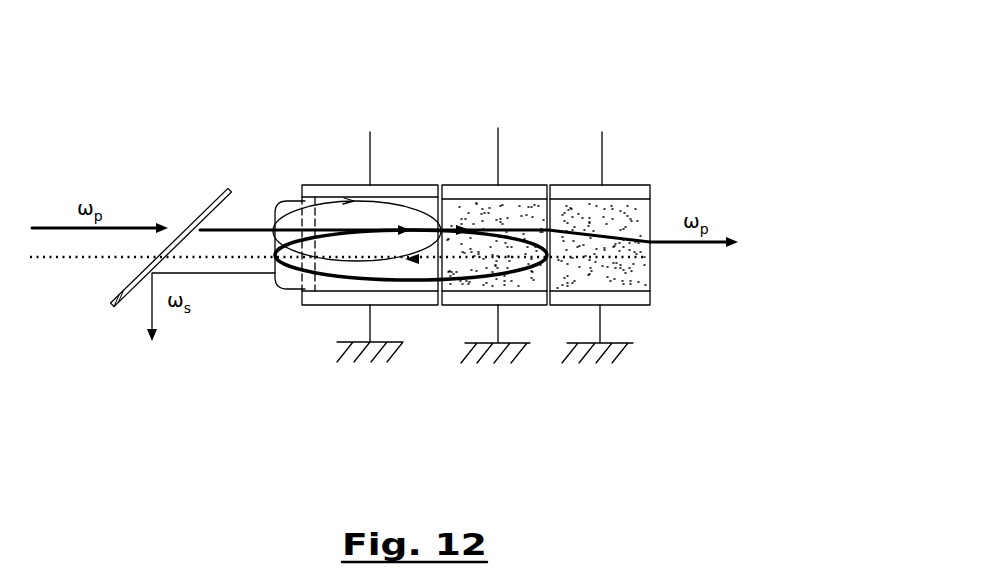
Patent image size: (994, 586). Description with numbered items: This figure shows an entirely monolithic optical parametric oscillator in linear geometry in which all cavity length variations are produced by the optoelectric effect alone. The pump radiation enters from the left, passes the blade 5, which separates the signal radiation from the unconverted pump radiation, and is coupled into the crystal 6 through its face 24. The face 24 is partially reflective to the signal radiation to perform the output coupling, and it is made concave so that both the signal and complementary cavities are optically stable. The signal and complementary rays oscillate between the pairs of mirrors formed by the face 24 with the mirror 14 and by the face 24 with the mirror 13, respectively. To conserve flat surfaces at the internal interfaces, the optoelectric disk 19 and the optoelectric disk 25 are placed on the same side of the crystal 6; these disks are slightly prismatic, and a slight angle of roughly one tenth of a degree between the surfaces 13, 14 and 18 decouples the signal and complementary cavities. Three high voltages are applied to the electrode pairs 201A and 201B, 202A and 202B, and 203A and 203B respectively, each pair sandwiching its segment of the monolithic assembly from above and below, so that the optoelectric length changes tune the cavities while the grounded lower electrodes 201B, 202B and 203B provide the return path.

The blade 5 is at (213, 205).
The face of the crystal 24 is at (276, 280).
The crystal 6 is at (322, 290).
The mirror 13 is at (438, 185).
The optoelectric disk 25 is at (515, 185).
The mirror 14 is at (552, 185).
The optoelectric disk 19 is at (650, 207).
The surface 18 is at (627, 210).
The electrode 202A is at (323, 185).
The electrode 202B is at (410, 300).
The electrode 203A is at (453, 185).
The electrode 203B is at (528, 300).
The electrode 201A is at (613, 185).
The electrode 201B is at (635, 300).